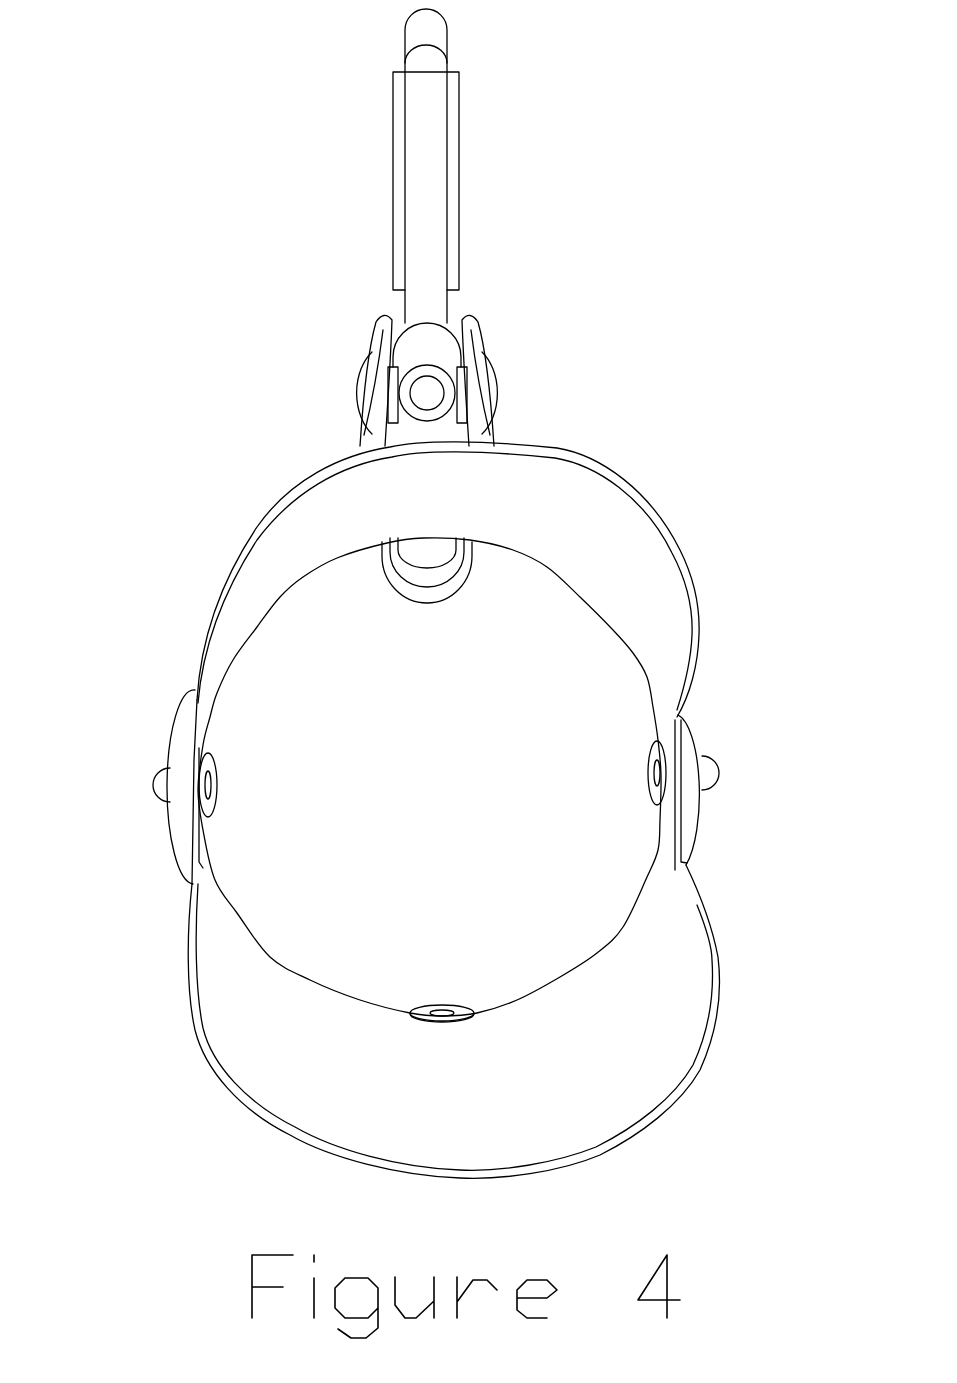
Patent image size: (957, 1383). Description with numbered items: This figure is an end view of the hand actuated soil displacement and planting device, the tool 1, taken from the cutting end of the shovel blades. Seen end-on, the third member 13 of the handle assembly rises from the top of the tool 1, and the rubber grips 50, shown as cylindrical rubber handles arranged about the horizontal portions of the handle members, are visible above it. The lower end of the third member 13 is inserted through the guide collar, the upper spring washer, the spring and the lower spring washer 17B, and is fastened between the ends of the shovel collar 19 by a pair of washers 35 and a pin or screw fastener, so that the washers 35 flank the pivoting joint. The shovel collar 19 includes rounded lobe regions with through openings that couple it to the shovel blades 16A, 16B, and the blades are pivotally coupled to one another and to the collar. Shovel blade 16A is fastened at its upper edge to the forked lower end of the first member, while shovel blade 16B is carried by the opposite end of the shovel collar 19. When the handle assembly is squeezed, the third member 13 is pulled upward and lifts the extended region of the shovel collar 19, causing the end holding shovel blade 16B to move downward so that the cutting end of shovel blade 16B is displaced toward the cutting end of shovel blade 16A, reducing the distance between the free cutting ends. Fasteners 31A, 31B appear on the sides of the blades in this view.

The device 1 is at (692, 378).
The third member 13 is at (430, 217).
The rubber grips 50 is at (450, 95).
The washers 35 is at (465, 393).
The lower spring washer 17B is at (366, 396).
The shovel blade 16A is at (287, 534).
The shovel blade 16B is at (600, 1090).
The shovel collar 19 is at (682, 728).
The right strap button 31A is at (708, 773).
The left strap button 31B is at (217, 782).